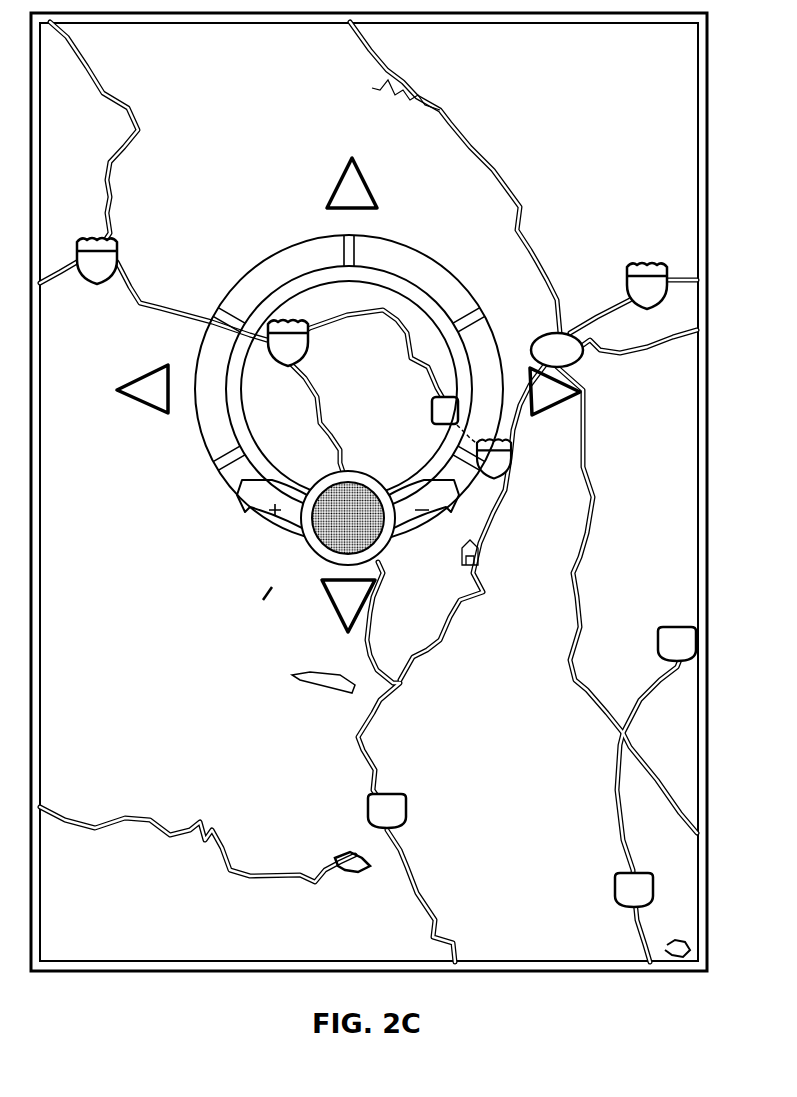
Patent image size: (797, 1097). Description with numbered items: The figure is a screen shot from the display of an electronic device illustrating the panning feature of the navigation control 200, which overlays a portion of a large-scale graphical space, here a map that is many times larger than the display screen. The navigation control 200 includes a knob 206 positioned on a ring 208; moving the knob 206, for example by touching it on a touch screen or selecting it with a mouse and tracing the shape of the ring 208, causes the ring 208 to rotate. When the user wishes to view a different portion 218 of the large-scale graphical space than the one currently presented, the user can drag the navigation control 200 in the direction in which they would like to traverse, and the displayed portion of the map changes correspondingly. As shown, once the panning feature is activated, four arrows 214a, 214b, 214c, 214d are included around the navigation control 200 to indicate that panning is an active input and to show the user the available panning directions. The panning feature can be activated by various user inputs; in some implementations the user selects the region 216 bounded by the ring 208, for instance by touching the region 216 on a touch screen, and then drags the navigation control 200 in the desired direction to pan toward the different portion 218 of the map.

The navigation control 200 is at (301, 401).
The knob 206 is at (342, 520).
The ring 208 is at (217, 437).
The arrow 214a is at (367, 190).
The arrow 214b is at (557, 392).
The arrow 214c is at (347, 603).
The arrow 214d is at (150, 378).
The region 216 is at (388, 369).
The portion of the large-scale graphical space 218 is at (601, 86).